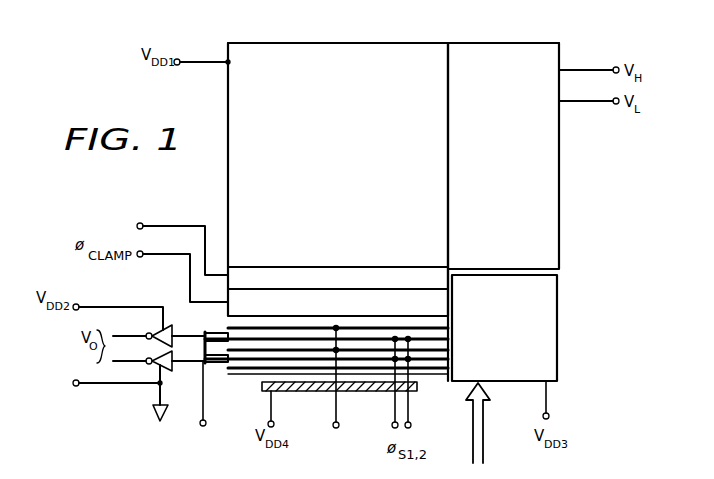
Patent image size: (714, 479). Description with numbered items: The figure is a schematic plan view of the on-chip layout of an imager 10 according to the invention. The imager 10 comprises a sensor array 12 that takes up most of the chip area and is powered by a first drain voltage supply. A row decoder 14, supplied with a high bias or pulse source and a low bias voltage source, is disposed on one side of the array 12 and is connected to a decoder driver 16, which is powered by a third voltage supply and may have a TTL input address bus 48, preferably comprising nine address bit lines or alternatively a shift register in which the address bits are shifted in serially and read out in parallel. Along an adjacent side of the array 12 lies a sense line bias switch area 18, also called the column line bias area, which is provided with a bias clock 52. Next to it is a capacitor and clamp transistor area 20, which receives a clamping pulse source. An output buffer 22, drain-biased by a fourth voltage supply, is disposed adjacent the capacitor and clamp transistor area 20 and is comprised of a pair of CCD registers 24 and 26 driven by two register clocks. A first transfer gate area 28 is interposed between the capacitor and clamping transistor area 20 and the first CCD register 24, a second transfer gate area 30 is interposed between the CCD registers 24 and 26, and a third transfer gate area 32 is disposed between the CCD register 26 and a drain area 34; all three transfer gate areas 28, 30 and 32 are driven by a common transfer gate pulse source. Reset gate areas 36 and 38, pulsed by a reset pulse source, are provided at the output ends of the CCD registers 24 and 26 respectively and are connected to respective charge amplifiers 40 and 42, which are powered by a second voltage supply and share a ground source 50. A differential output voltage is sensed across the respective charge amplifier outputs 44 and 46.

The imager 10 is at (364, 35).
The sensor array 12 is at (311, 47).
The row decoder 14 is at (508, 48).
The decoder driver 16 is at (558, 337).
The sense line bias switch area 18 is at (257, 280).
The capacitor and clamp transistor area 20 is at (338, 295).
The output buffer 22 is at (317, 416).
The first CCD register 24 is at (213, 326).
The second CCD register 26 is at (218, 364).
The first transfer gate area 28 is at (370, 326).
The second transfer gate area 30 is at (276, 345).
The third transfer gate area 32 is at (421, 392).
The drain area 34 is at (350, 393).
The reset gate area 36 is at (203, 333).
The reset gate area 38 is at (199, 367).
The charge amplifier 40 is at (170, 327).
The charge amplifier 42 is at (157, 369).
The charge amplifier output 44 is at (135, 333).
The charge amplifier output 46 is at (135, 364).
The TTL input address bus 48 is at (483, 425).
The ground source 50 is at (92, 386).
The bias clock 52 is at (178, 225).